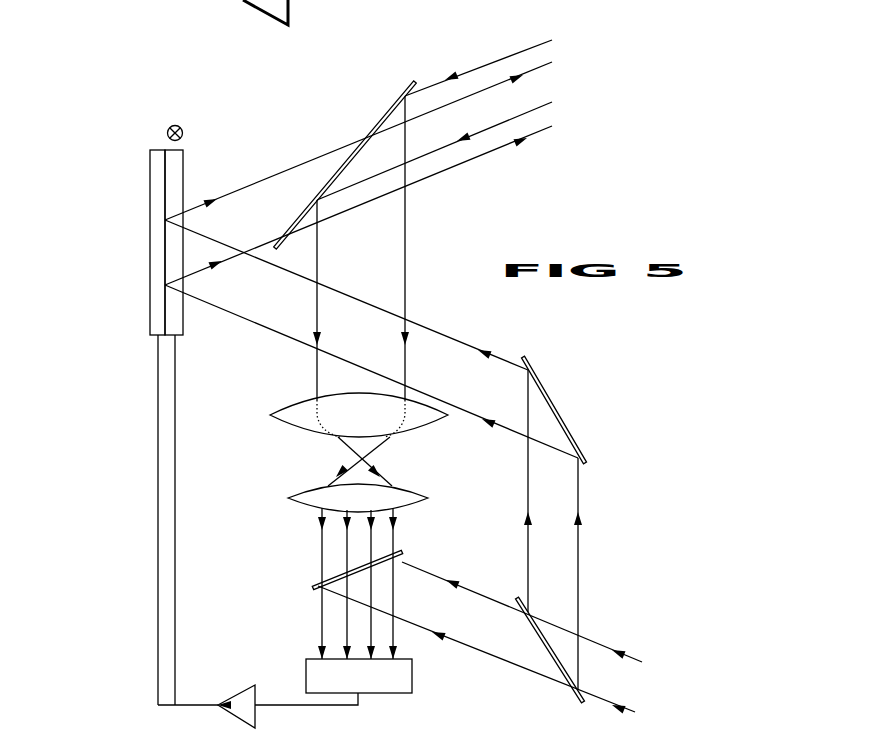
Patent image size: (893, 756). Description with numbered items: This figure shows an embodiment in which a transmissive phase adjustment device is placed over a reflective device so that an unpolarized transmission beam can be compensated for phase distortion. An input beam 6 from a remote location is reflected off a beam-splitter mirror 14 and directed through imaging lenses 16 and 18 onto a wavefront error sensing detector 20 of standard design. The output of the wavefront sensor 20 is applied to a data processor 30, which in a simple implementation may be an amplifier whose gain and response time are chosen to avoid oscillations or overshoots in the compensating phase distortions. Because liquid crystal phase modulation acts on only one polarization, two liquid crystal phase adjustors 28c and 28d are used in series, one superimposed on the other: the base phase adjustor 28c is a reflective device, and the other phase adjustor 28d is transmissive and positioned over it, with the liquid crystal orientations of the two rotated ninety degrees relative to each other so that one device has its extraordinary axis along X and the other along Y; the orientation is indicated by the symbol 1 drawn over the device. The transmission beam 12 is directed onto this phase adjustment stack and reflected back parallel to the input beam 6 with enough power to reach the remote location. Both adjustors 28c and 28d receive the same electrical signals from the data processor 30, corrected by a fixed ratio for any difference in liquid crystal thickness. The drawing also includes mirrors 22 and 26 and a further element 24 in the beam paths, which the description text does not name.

The light beam direction indicator 1 is at (168, 136).
The input beam 6 is at (468, 73).
The transmission beam 12 is at (637, 655).
The beam-splitter mirror 14 is at (375, 123).
The imaging lens 16 is at (295, 412).
The imaging lens 18 is at (300, 493).
The wavefront error sensing detector 20 is at (412, 673).
The mirror 22 is at (560, 675).
The beam splitter 24 is at (340, 575).
The mirror 26 is at (563, 420).
The base phase adjustor 28c is at (148, 268).
The transmissive phase adjustor 28d is at (183, 315).
The data processor 30 is at (238, 693).